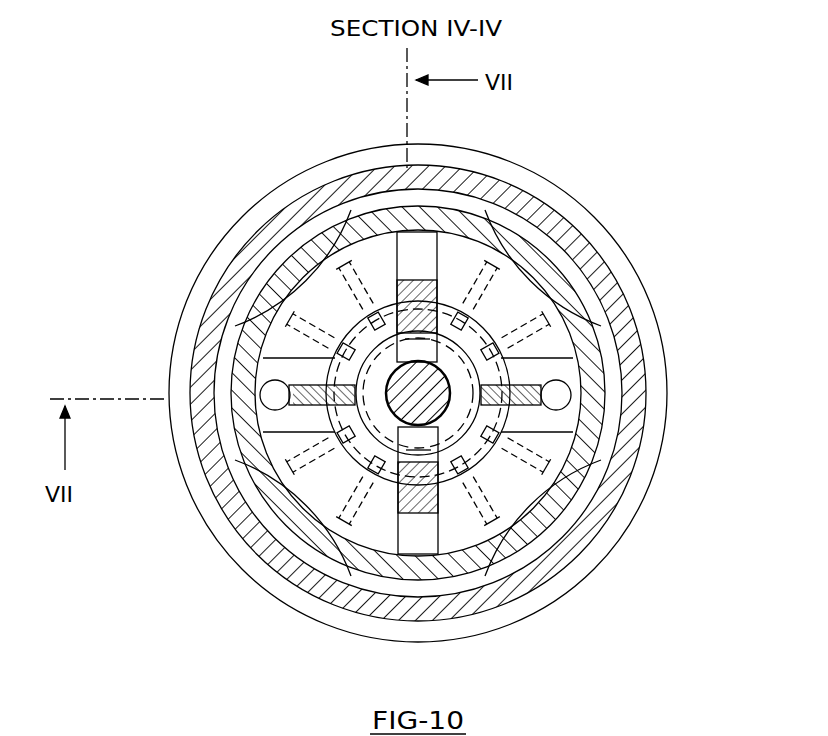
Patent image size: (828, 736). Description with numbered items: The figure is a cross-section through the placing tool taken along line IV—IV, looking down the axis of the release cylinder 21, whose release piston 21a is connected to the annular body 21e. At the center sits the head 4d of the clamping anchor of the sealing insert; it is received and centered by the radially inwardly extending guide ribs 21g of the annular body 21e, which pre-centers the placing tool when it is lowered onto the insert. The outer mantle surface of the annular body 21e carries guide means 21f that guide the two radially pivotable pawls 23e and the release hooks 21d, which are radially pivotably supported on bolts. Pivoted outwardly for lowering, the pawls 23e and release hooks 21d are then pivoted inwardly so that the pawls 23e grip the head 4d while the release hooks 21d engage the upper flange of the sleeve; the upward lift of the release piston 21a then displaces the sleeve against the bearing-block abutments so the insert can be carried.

The housing 21 is at (646, 377).
The release piston 21a is at (587, 439).
The release hooks 21d is at (293, 389).
The annular body 21e is at (543, 342).
The guide means 21f is at (293, 405).
The guide ribs 21g is at (338, 430).
The pawls 23e is at (434, 283).
The head of the clamping anchor 4d is at (391, 413).